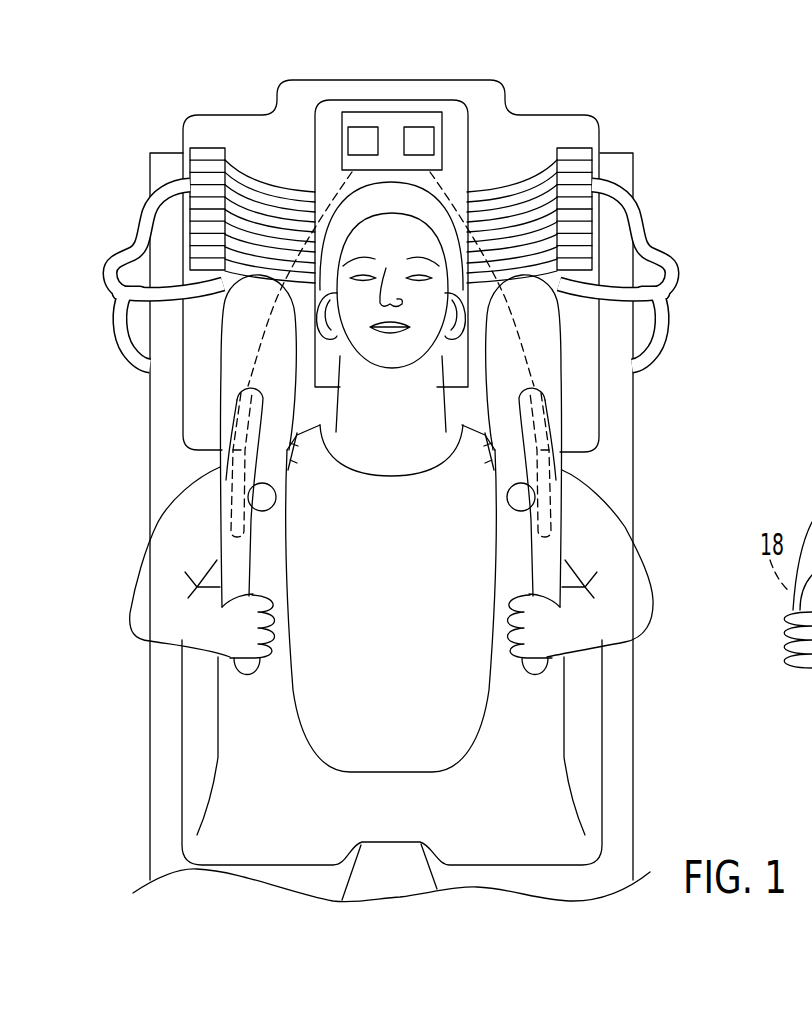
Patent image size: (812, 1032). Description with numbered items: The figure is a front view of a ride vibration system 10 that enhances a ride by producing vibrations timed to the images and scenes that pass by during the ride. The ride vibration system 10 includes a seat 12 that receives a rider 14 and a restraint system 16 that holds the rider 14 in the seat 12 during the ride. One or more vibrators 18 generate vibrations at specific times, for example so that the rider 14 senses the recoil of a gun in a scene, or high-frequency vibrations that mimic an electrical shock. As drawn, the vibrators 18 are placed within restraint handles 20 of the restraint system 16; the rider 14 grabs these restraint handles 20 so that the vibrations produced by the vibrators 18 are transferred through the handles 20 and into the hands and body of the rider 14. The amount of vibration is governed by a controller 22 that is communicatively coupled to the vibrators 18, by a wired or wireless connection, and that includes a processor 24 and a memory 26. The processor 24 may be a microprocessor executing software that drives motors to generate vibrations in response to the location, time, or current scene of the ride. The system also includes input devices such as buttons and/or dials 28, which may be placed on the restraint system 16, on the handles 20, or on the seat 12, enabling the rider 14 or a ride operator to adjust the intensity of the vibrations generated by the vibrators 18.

The ride vibration system 10 is at (662, 527).
The seat 12 is at (617, 792).
The rider 14 is at (403, 595).
The restraint system 16 is at (146, 757).
The vibrator 18 is at (215, 492).
The restraint handle 20 is at (262, 690).
The controller 22 is at (392, 112).
The processor 24 is at (342, 142).
The memory 26 is at (442, 142).
The buttons and/or dials 28 is at (270, 507).